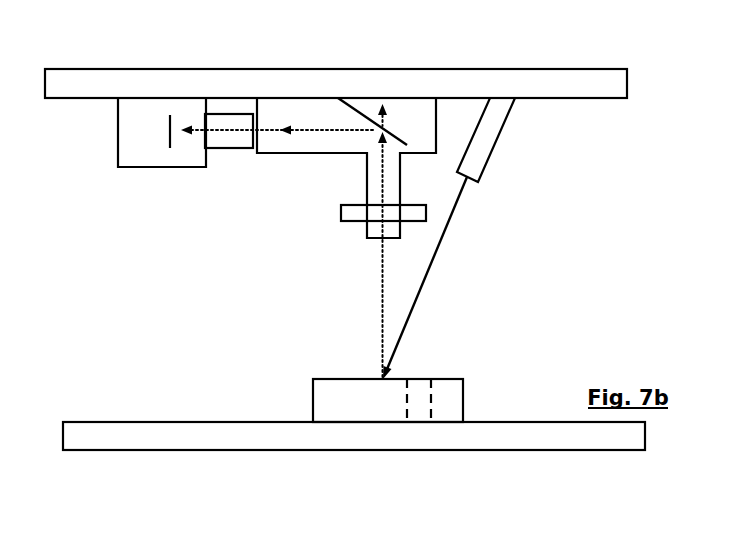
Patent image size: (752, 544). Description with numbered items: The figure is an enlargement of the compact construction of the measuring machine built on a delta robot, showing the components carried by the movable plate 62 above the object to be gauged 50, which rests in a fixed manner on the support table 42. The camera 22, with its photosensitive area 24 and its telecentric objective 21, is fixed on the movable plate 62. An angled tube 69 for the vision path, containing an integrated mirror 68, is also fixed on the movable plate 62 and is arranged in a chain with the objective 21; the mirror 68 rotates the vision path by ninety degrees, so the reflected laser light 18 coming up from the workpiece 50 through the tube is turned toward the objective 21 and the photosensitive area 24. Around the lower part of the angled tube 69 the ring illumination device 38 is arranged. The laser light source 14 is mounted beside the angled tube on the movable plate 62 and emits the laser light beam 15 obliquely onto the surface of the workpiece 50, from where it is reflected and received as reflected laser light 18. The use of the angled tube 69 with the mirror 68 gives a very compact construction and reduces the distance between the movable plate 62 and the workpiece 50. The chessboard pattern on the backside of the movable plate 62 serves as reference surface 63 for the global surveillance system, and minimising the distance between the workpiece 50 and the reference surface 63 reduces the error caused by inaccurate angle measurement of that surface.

The laser light source 14 is at (483, 137).
The laser light beam 15 is at (442, 242).
The reflected laser light 18 is at (290, 128).
The telecentric objective 21 is at (227, 125).
The camera 22 is at (137, 129).
The photosensitive area 24 is at (173, 127).
The ring illumination device 38 is at (350, 213).
The support table 42 is at (233, 437).
The object to be gauged 50 is at (355, 380).
The movable plate 62 is at (459, 83).
The reference surface 63 is at (412, 68).
The mirror 68 is at (356, 110).
The angled tube 69 is at (375, 181).